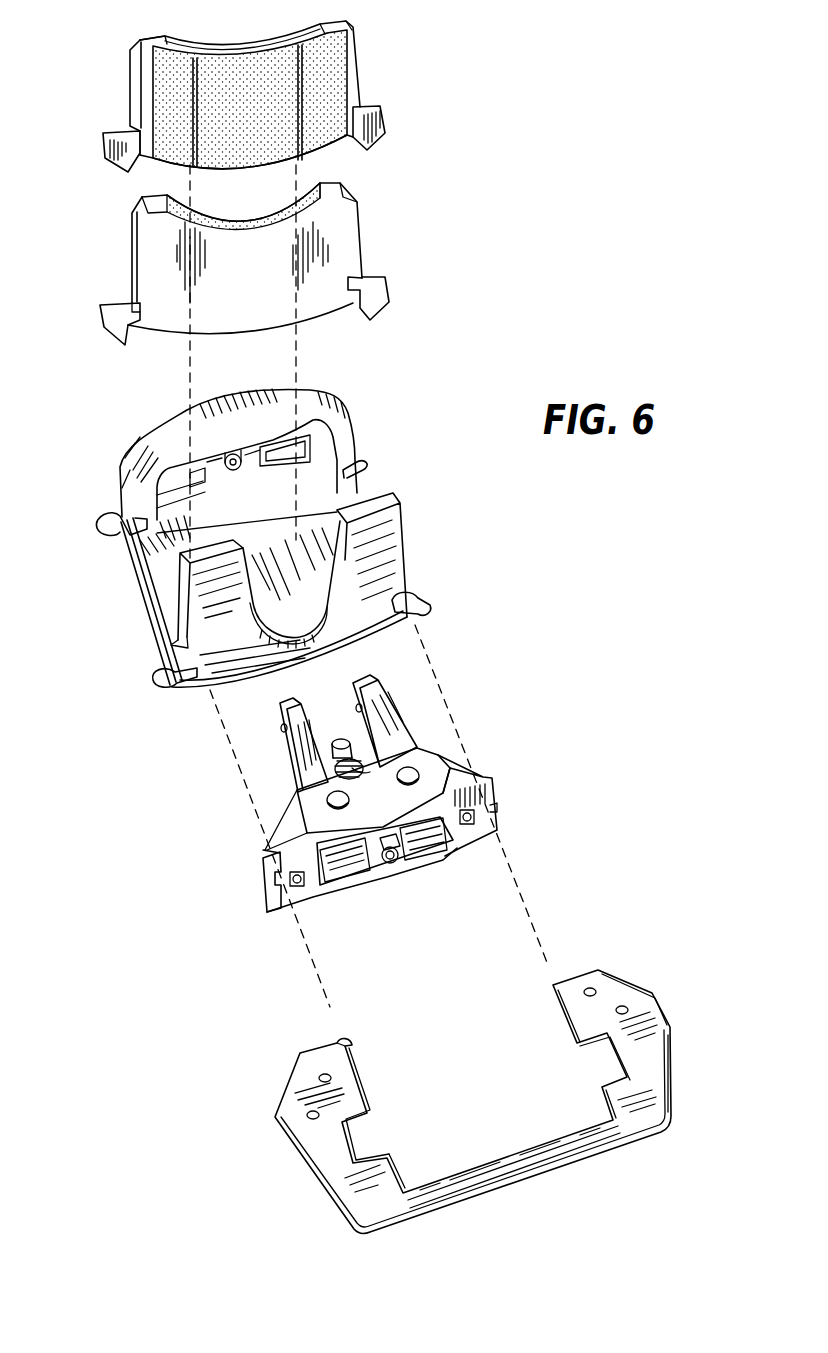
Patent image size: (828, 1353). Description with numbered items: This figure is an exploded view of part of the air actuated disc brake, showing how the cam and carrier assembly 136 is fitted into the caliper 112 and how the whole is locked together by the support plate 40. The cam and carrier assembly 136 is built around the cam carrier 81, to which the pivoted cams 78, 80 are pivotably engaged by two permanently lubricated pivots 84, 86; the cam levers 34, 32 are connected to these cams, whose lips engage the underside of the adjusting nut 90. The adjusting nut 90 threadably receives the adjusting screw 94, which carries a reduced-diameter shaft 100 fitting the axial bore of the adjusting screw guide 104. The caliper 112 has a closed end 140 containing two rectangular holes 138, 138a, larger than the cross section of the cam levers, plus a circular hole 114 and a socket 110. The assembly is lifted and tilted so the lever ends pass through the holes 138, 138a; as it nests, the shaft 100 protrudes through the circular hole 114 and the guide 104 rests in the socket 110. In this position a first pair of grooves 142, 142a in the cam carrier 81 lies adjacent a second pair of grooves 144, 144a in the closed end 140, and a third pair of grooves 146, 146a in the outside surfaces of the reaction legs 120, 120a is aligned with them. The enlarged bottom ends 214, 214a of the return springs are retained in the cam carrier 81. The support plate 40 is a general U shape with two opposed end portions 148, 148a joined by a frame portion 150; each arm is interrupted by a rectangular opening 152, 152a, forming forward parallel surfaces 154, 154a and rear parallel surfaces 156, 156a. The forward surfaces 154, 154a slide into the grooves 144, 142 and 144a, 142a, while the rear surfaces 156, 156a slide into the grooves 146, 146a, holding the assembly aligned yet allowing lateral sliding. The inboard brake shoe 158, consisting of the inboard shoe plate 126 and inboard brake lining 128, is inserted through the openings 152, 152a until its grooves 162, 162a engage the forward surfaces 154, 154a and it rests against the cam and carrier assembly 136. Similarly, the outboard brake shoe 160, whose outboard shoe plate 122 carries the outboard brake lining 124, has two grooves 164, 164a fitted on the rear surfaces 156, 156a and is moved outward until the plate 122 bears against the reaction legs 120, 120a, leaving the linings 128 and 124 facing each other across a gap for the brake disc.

The inboard brake shoe 158 is at (118, 63).
The inboard shoe plate 126 is at (133, 50).
The inboard brake lining 128 is at (248, 78).
The groove 162 is at (133, 130).
The groove 162a is at (363, 110).
The outboard brake shoe 160 is at (120, 232).
The outboard shoe plate 122 is at (145, 256).
The outboard brake lining 124 is at (342, 189).
The groove 164 is at (130, 306).
The groove 164a is at (357, 277).
The caliper 112 is at (344, 420).
The circular hole 114 is at (236, 455).
The rectangular hole 138 is at (175, 477).
The rectangular hole 138a is at (293, 430).
The socket 110 is at (230, 472).
The closed end 140 is at (222, 476).
The groove 144 is at (113, 520).
The groove 144a is at (370, 470).
The reaction leg 120 is at (200, 585).
The reaction leg 120a is at (390, 530).
The groove 146 is at (165, 676).
The groove 146a is at (418, 598).
The cam and carrier assembly 136 is at (504, 757).
The cam lever 32 is at (378, 688).
The cam lever 34 is at (280, 712).
The reduced-diameter shaft 100 is at (346, 740).
The adjusting screw guide 104 is at (363, 758).
The pivot 84 is at (333, 800).
The pivot 86 is at (412, 778).
The cam carrier 81 is at (292, 811).
The groove 142 is at (270, 876).
The groove 142a is at (500, 807).
The bottom end of spring 214 is at (297, 886).
The bottom end of spring 214a is at (473, 826).
The pivoted cam 78 is at (349, 870).
The pivoted cam 80 is at (430, 842).
The adjusting nut 90 is at (385, 866).
The adjusting screw 94 is at (393, 866).
The support plate 40 is at (315, 1215).
The end portion 148 is at (298, 1136).
The end portion 148a is at (650, 1032).
The frame portion 150 is at (508, 1155).
The rectangular opening 152 is at (370, 1132).
The rectangular opening 152a is at (605, 1066).
The forward parallel surface 154 is at (338, 1033).
The forward parallel surface 154a is at (560, 1018).
The rear parallel surface 156 is at (396, 1170).
The rear parallel surface 156a is at (606, 1110).